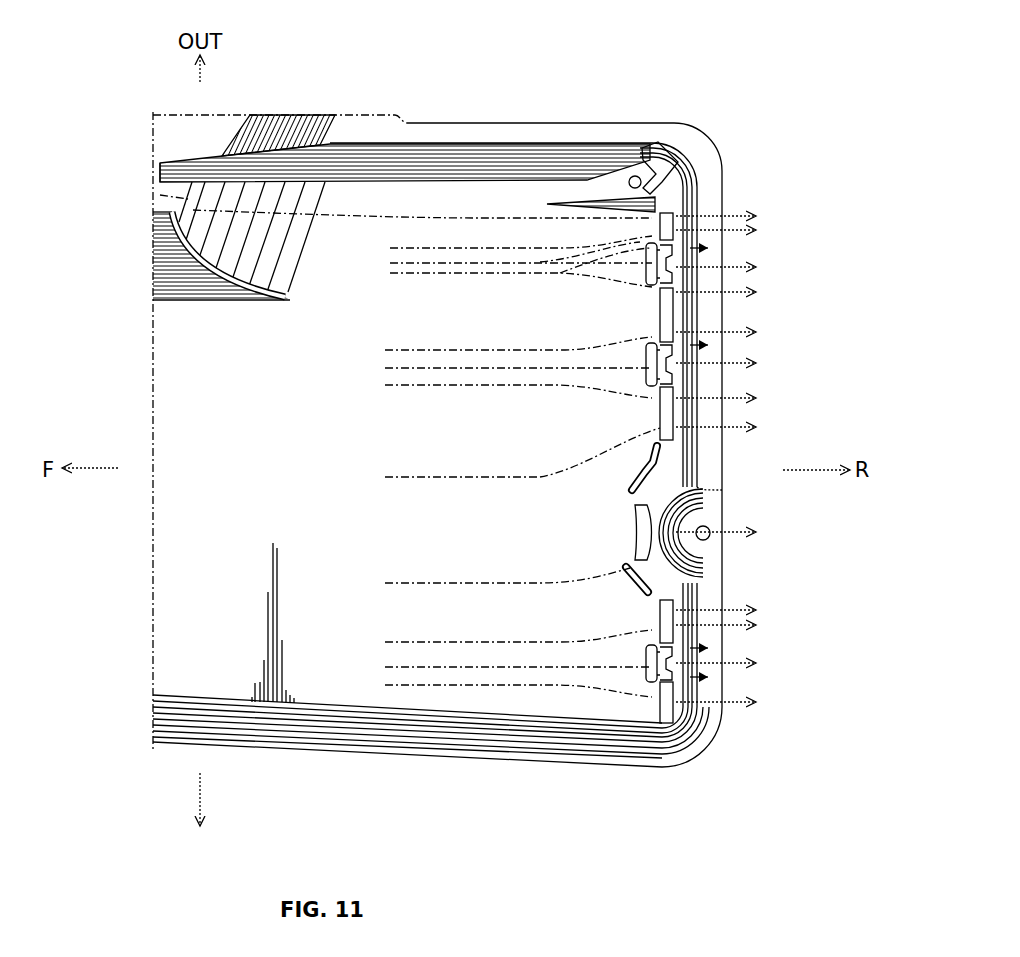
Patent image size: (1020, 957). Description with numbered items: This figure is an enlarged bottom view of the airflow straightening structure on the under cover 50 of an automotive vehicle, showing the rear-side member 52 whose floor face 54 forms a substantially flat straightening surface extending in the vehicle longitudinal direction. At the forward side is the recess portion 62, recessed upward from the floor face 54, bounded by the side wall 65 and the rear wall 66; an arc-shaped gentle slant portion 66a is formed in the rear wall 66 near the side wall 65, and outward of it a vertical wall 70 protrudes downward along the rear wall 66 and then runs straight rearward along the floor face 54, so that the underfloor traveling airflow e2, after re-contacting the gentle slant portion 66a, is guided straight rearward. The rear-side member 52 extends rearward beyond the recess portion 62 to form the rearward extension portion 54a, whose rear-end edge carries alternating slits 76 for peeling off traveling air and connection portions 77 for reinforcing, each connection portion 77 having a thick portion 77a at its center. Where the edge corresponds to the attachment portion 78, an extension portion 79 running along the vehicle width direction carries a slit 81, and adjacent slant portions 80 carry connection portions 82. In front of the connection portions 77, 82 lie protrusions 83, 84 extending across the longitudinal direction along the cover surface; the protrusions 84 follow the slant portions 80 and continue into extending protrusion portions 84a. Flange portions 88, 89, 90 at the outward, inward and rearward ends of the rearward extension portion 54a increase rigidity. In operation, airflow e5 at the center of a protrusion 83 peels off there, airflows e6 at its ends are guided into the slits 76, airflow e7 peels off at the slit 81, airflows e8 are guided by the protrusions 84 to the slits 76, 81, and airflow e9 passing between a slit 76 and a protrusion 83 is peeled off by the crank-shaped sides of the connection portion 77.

The under cover 50 is at (146, 598).
The rear-side member 52 is at (148, 638).
The floor face 54 is at (198, 472).
The rearward extension portion 54a is at (431, 757).
The recess portion 62 is at (163, 154).
The side wall 65 is at (152, 250).
The rear wall 66 is at (275, 130).
The gentle slant portion 66a is at (250, 238).
The vertical wall 70 is at (440, 160).
The slit 76 is at (674, 315).
The connection portion 77 is at (672, 254).
The thick portion 77a is at (674, 270).
The attachment portion 78 is at (730, 555).
The extension portion 79 is at (635, 545).
The slant portion 80 is at (700, 510).
The slit 81 is at (635, 522).
The connection portion 82 is at (690, 484).
The protrusion 83 is at (648, 265).
The protrusion 84 is at (648, 466).
The extending protrusion portion 84a is at (655, 456).
The flange portion 88 is at (575, 127).
The flange portion 89 is at (570, 767).
The flange portion 90 is at (718, 178).
The underfloor traveling airflow e2 is at (328, 219).
The underfloor traveling airflow e5 is at (413, 280).
The underfloor traveling airflow e6 is at (600, 272).
The underfloor traveling airflow e7 is at (462, 499).
The underfloor traveling airflow e8 is at (548, 477).
The underfloor traveling airflow e9 is at (645, 243).